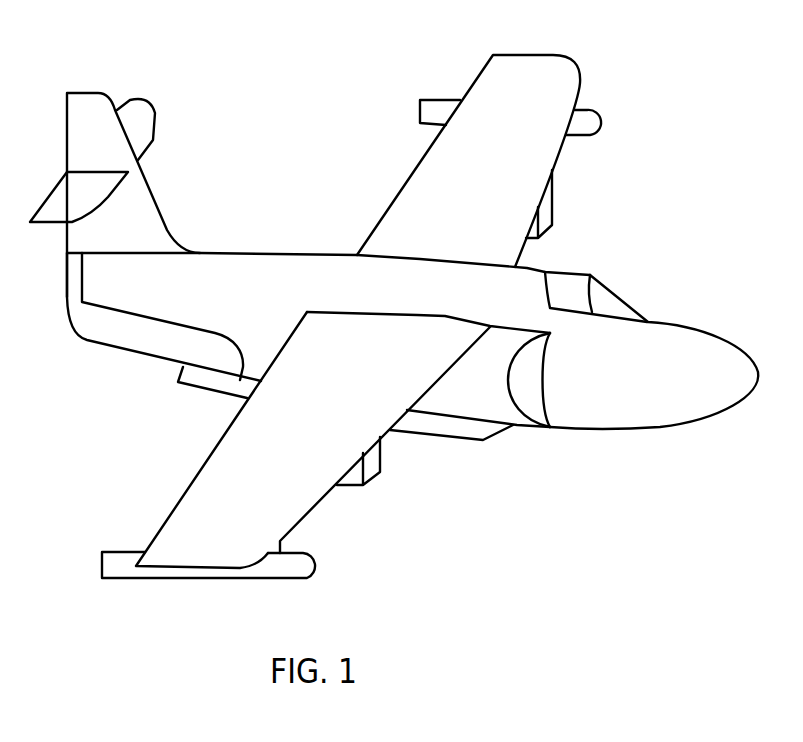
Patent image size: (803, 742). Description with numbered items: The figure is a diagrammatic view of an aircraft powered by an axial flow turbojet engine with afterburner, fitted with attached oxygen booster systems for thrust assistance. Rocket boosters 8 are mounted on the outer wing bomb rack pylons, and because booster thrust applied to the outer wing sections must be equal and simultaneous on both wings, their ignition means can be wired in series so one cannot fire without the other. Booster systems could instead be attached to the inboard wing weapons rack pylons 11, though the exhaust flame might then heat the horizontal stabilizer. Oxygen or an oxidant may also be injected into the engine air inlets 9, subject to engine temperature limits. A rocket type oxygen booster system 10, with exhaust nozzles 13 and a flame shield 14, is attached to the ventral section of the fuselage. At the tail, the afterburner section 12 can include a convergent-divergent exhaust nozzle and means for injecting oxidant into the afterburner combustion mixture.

The rocket boosters 8 is at (310, 578).
The engine air inlets 9 is at (527, 390).
The rocket type oxygen booster system 10 is at (495, 428).
The inboard wing weapons rack pylons 11 is at (550, 203).
The afterburner section 12 is at (67, 295).
The exhaust nozzles 13 is at (183, 373).
The flame shield 14 is at (147, 337).